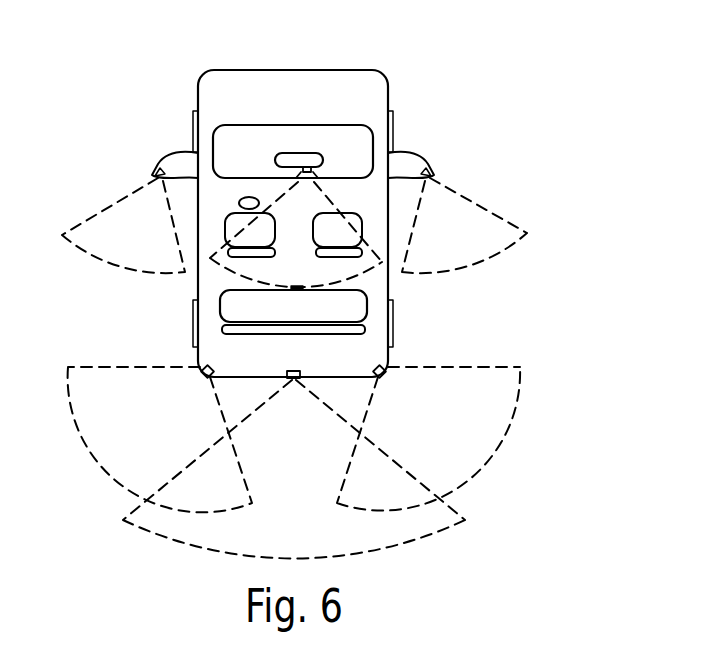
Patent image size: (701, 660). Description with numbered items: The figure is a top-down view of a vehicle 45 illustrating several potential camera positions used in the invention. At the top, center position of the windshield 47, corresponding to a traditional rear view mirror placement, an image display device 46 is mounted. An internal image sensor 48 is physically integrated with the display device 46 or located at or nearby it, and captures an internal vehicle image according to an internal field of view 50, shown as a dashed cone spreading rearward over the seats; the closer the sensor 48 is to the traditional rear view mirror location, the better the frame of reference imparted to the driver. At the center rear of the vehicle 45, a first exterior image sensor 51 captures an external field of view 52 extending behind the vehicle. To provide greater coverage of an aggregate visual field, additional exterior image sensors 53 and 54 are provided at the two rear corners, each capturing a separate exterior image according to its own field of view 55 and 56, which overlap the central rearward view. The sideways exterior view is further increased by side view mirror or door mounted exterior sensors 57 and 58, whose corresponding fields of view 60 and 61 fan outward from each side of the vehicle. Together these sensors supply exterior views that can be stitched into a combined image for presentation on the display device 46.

The vehicle 45 is at (237, 70).
The image display device 46 is at (303, 167).
The windshield 47 is at (232, 125).
The internal image sensor 48 is at (306, 175).
The internal field of view 50 is at (230, 274).
The first exterior image sensor 51 is at (290, 371).
The external field of view 52 is at (215, 553).
The additional exterior image sensor 53 is at (202, 365).
The additional exterior image sensor 54 is at (380, 368).
The field of view 55 is at (88, 428).
The field of view 56 is at (497, 430).
The side view mirror or door mounted exterior sensor 57 is at (163, 170).
The side view mirror or door mounted exterior sensor 58 is at (420, 172).
The field of view 60 is at (98, 211).
The field of view 61 is at (478, 262).